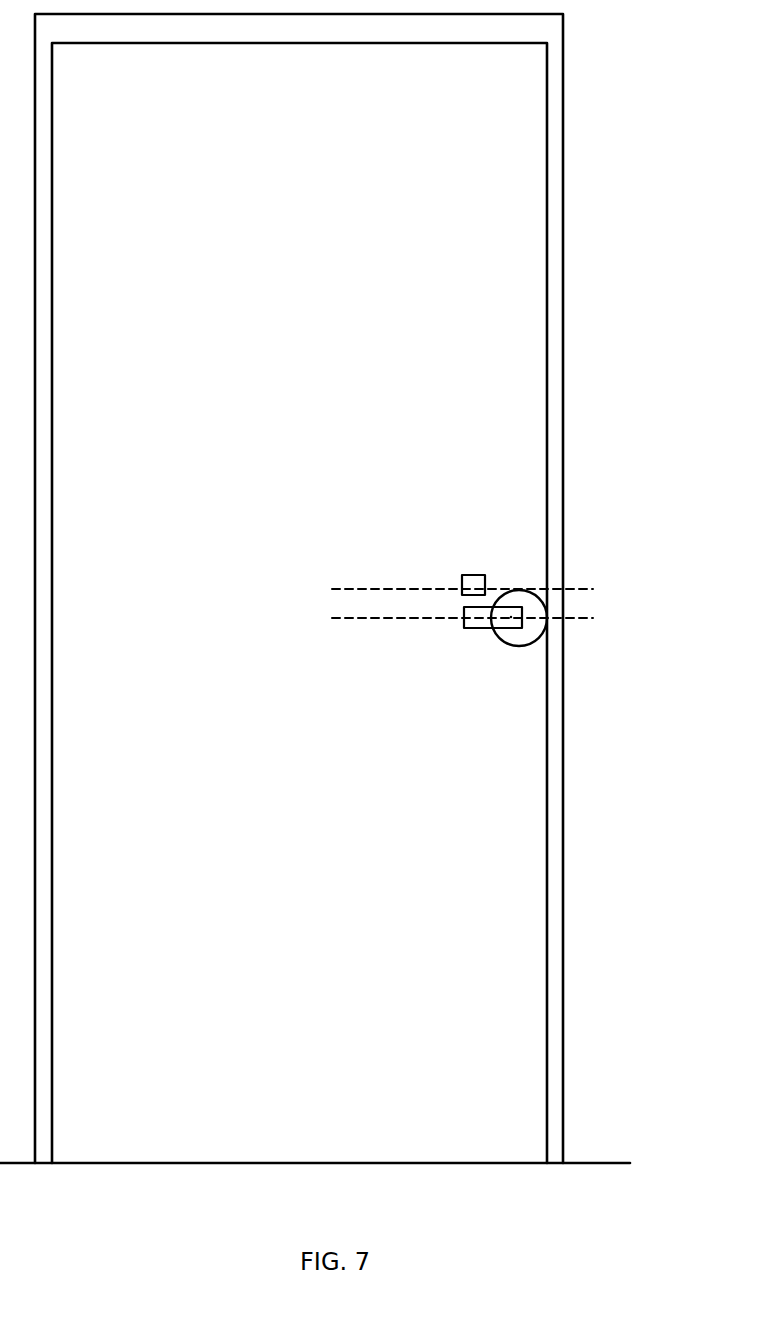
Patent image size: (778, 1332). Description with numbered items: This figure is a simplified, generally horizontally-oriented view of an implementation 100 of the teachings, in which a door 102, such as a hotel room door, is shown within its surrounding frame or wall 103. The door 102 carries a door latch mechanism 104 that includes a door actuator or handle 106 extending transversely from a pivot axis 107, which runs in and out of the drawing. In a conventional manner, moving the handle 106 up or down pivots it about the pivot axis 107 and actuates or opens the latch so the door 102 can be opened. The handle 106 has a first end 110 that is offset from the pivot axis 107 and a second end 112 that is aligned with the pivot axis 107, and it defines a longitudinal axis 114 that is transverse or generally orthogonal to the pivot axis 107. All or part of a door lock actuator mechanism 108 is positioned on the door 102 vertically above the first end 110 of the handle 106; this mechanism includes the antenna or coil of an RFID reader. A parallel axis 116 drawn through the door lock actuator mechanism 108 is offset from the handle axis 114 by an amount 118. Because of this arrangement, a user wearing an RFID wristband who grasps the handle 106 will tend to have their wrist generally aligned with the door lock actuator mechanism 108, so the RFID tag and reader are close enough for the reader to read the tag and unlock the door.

The implementation 100 is at (262, 1188).
The door 102 is at (226, 310).
The wall 103 is at (666, 114).
The door latch mechanism 104 is at (536, 657).
The door handle 106 is at (558, 690).
The pivot axis 107 is at (517, 606).
The door lock actuator mechanism 108 is at (480, 590).
The first end 110 is at (477, 628).
The second end 112 is at (512, 628).
The longitudinal axis 114 is at (588, 631).
The parallel axis 116 is at (382, 587).
The offset amount 118 is at (349, 682).